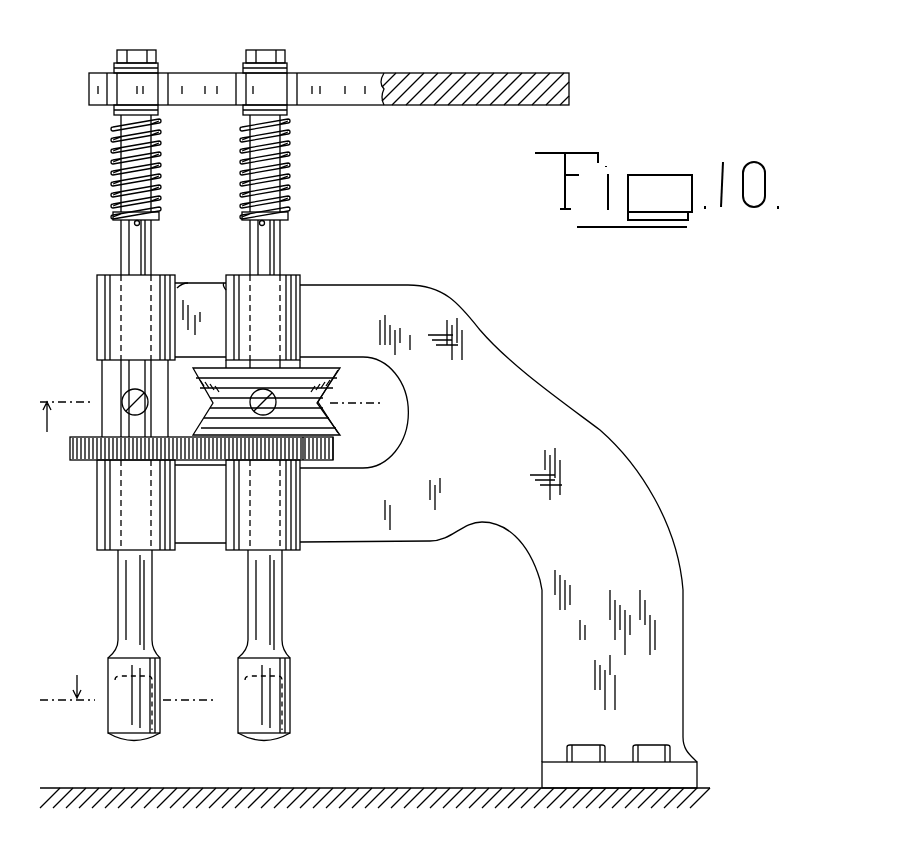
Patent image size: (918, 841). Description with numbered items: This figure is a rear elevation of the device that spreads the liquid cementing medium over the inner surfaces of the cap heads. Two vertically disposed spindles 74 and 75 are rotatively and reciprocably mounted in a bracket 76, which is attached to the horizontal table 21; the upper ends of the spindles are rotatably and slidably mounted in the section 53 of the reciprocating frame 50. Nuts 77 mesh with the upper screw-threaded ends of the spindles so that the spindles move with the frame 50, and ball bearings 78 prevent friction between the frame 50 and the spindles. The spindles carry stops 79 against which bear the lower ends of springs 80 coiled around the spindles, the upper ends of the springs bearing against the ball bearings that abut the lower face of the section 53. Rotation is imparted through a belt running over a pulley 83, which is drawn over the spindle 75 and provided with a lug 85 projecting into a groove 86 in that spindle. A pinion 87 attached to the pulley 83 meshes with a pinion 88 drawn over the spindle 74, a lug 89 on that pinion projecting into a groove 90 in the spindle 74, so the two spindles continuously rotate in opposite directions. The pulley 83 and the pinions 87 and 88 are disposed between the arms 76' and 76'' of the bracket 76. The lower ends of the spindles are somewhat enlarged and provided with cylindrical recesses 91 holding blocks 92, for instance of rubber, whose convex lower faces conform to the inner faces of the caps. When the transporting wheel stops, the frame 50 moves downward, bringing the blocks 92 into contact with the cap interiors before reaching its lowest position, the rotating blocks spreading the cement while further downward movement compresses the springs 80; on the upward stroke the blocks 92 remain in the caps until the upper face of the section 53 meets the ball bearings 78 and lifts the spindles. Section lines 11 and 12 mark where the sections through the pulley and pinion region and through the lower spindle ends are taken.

The horizontal table 21 is at (413, 788).
The frame 50 is at (560, 90).
The section of the frame 53 is at (397, 83).
The spindle 74 is at (118, 590).
The spindle 75 is at (253, 600).
The bracket 76 is at (436, 525).
The arm of the bracket 76' is at (224, 301).
The arm of the bracket 76'' is at (177, 505).
The nuts 77 is at (140, 50).
The ball bearings 78 is at (115, 65).
The stops 79 is at (133, 222).
The springs 80 is at (247, 165).
The pulley 83 is at (327, 417).
The lug 85 is at (252, 402).
The groove 86 is at (265, 257).
The pinion 87 is at (330, 450).
The pinion 88 is at (73, 448).
The lug 89 is at (123, 400).
The groove 90 is at (137, 250).
The cylindrical recesses 91 is at (112, 713).
The blocks 92 is at (120, 738).
The section line 11— 11 is at (210, 406).
The section line 12— 12 is at (126, 687).